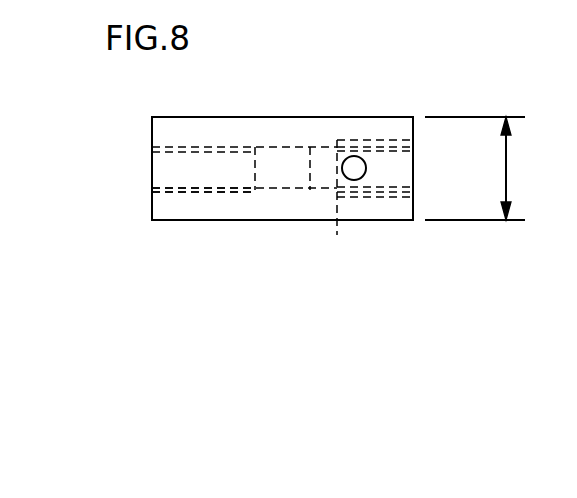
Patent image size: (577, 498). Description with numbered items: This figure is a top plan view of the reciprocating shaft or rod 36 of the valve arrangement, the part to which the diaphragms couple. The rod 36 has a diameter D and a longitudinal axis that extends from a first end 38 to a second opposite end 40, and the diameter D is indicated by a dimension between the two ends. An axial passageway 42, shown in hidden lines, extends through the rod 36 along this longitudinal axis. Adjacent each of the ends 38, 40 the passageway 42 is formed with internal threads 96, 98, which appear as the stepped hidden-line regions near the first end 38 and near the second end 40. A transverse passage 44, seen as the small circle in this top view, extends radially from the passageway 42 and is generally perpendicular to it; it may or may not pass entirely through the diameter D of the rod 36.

The rod 36 is at (464, 269).
The first end 38 is at (150, 208).
The second opposite end 40 is at (415, 127).
The axial passageway 42 is at (283, 152).
The transverse passage 44 is at (360, 177).
The internal threads 96 is at (210, 192).
The internal threads 98 is at (367, 204).
The diameter D is at (475, 168).